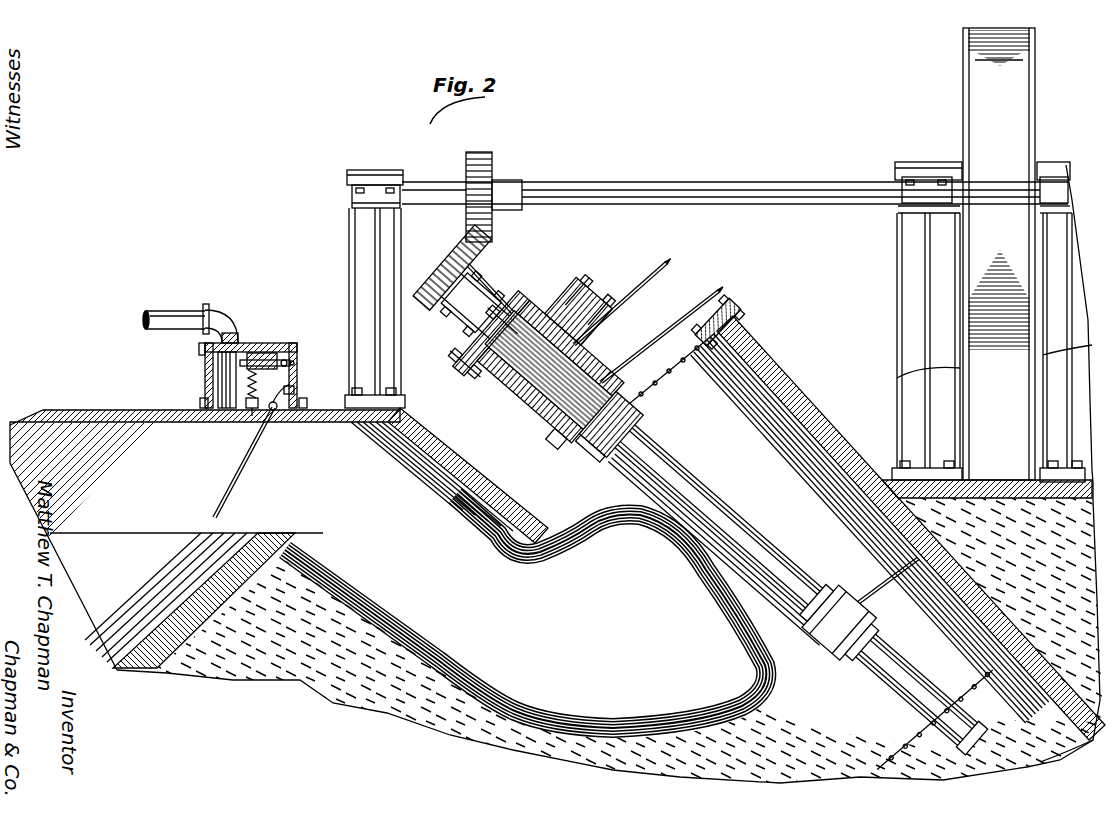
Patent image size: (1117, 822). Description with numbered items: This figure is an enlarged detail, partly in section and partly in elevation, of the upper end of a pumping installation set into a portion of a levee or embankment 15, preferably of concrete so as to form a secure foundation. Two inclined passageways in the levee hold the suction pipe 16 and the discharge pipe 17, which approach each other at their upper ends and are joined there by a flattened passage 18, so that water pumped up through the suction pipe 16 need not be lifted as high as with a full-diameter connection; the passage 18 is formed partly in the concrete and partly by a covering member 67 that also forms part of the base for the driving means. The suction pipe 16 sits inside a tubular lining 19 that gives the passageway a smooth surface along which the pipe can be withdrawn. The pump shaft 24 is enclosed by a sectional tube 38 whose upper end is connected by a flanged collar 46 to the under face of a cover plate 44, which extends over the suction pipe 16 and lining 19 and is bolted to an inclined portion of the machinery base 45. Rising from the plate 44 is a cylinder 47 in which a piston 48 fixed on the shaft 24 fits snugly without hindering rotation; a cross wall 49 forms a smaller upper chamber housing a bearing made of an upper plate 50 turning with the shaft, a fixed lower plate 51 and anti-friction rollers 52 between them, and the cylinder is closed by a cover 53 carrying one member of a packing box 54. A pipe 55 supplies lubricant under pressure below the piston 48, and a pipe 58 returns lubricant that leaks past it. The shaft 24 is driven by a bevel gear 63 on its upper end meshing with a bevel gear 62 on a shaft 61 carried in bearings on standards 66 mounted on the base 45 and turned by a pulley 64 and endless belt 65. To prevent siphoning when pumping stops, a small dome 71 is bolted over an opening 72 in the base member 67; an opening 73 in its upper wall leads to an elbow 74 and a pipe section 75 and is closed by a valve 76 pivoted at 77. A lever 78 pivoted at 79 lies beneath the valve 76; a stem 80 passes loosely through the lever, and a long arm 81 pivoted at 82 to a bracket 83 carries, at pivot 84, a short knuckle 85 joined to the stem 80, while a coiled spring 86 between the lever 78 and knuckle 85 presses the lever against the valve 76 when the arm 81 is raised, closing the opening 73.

The levee portion 15 is at (335, 682).
The suction pipe 16 is at (1076, 750).
The discharge pipe 17 is at (182, 662).
The connecting passage 18 is at (437, 668).
The tubular lining 19 is at (797, 412).
The pump shaft 24 is at (966, 740).
The shaft inclosing tube 38 is at (665, 435).
The cover plate 44 is at (726, 314).
The machinery base portion 45 is at (782, 392).
The flanged collar 46 is at (604, 456).
The cylinder 47 is at (552, 441).
The piston 48 is at (540, 420).
The cross wall 49 is at (522, 400).
The upper bearing plate 50 is at (505, 352).
The lower bearing plate 51 is at (500, 388).
The anti-friction rollers 52 is at (492, 360).
The cover 53 is at (468, 380).
The packing box 54 is at (532, 305).
The lubricant supply pipe 55 is at (716, 296).
The lubricant return pipe 58 is at (667, 266).
The driving shaft 61 is at (790, 182).
The bevel gear 62 is at (494, 233).
The bevel gear 63 is at (450, 262).
The pulley 64 is at (1036, 50).
The endless belt 65 is at (1015, 62).
The standards 66 is at (358, 240).
The covering member 67 is at (46, 412).
The dome 71 is at (292, 345).
The opening in base 72 is at (212, 415).
The dome opening 73 is at (236, 333).
The elbow 74 is at (210, 306).
The pipe section 75 is at (146, 322).
The valve 76 is at (208, 378).
The valve pivot 77 is at (203, 355).
The lever 78 is at (282, 352).
The lever pivot 79 is at (298, 362).
The stem 80 is at (263, 358).
The arm 81 is at (222, 515).
The arm pivot 82 is at (278, 412).
The bracket 83 is at (297, 392).
The knuckle pivot 84 is at (262, 414).
The knuckle 85 is at (243, 414).
The coiled spring 86 is at (246, 410).